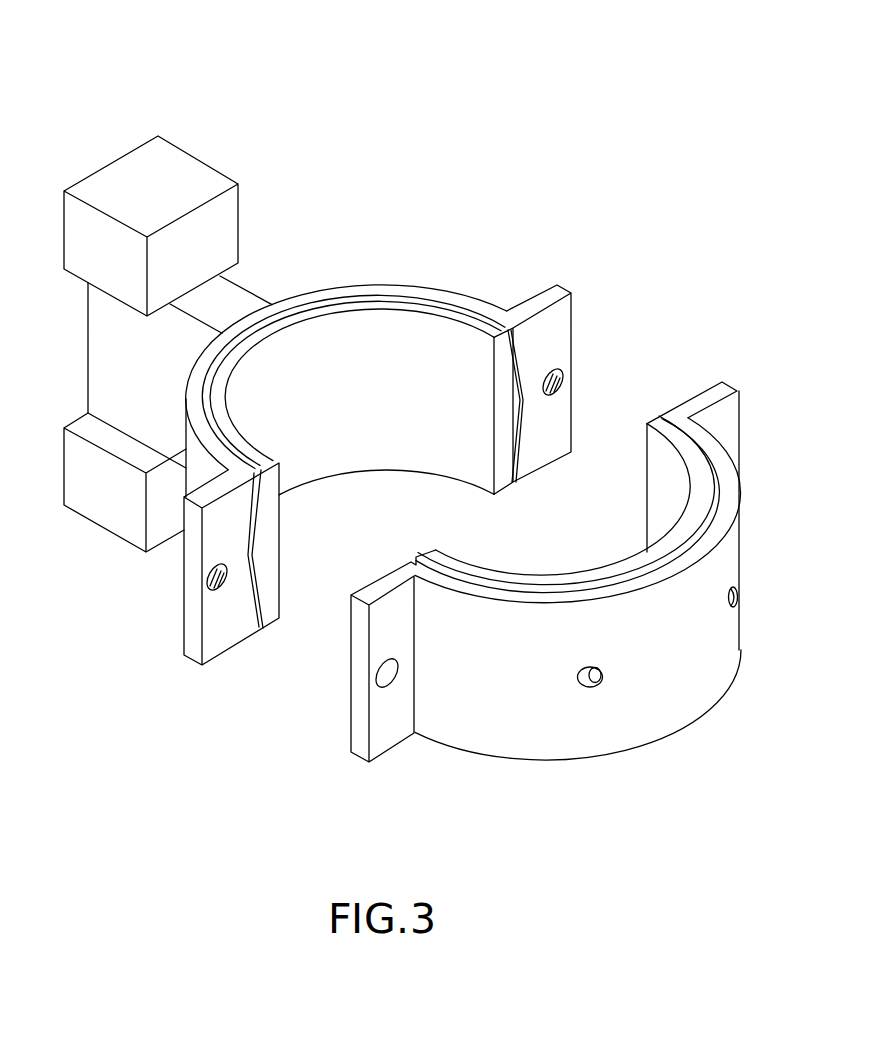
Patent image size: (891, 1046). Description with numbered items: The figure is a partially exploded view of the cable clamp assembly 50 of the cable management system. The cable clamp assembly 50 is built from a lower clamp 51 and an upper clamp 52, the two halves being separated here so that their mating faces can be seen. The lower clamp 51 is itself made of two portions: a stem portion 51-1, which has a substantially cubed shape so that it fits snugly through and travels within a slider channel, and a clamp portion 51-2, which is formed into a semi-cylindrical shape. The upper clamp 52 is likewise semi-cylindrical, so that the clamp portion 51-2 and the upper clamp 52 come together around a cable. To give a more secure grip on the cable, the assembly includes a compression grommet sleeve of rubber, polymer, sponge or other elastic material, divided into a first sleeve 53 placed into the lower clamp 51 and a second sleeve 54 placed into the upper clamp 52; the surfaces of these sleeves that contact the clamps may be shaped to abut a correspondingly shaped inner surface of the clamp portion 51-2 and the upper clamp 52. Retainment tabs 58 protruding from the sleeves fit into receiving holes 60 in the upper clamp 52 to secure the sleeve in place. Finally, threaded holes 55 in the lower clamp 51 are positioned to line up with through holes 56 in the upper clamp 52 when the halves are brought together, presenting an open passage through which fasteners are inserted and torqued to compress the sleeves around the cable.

The cable clamp assembly 50 is at (771, 175).
The lower clamp 51 is at (391, 213).
The stem portion 51-1 is at (183, 165).
The clamp portion 51-2 is at (547, 297).
The upper clamp 52 is at (723, 420).
The first sleeve 53 is at (340, 430).
The second sleeve 54 is at (670, 477).
The threaded holes 55 is at (563, 380).
The through holes 56 is at (383, 675).
The retainment tabs 58 is at (600, 682).
The receiving holes 60 is at (580, 682).